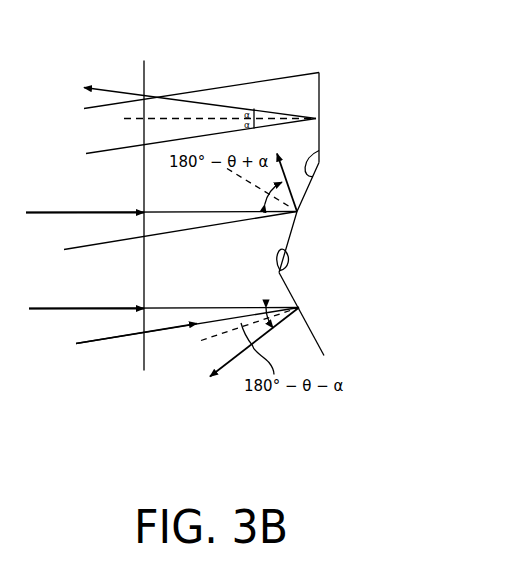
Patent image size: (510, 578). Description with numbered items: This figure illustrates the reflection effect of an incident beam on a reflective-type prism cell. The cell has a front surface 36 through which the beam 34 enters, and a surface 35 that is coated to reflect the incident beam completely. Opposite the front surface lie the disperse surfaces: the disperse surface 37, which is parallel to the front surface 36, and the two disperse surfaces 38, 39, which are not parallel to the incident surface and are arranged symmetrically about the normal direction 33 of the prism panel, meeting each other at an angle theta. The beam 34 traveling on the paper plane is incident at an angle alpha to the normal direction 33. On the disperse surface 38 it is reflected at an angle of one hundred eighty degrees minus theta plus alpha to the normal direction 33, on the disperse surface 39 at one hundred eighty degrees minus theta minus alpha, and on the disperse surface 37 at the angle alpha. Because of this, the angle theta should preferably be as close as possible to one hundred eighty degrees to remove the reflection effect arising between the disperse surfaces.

The normal direction 33 is at (82, 212).
The beam 34 is at (96, 108).
The surface of the prism cell 35 is at (228, 70).
The front surface of the prism 36 is at (143, 358).
The disperse surface 37 is at (318, 93).
The disperse surface 38 is at (300, 218).
The disperse surface 39 is at (287, 285).